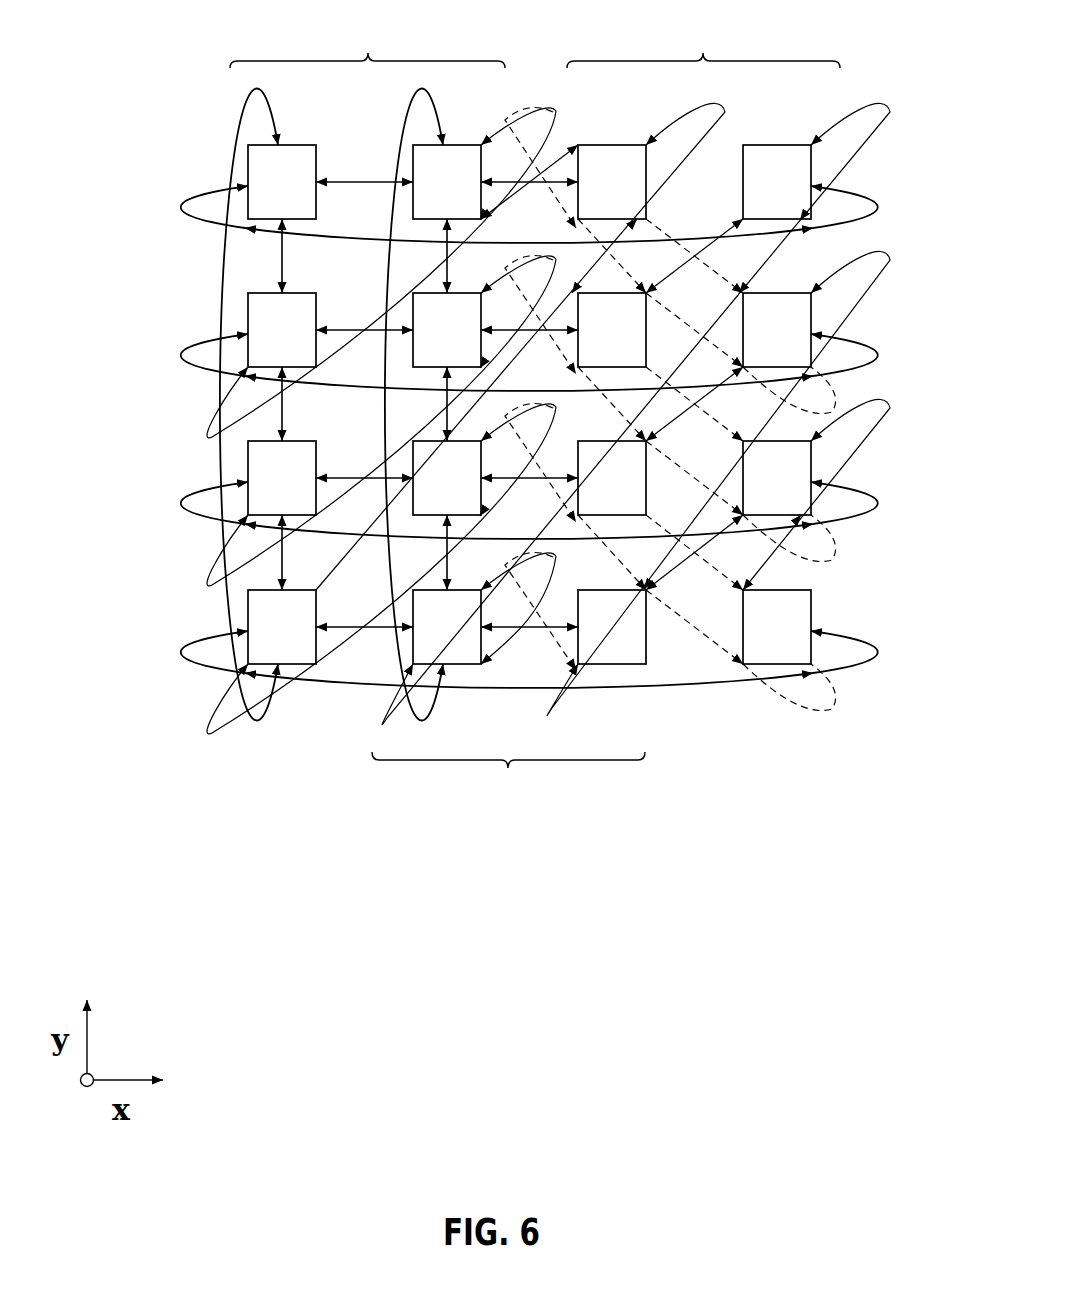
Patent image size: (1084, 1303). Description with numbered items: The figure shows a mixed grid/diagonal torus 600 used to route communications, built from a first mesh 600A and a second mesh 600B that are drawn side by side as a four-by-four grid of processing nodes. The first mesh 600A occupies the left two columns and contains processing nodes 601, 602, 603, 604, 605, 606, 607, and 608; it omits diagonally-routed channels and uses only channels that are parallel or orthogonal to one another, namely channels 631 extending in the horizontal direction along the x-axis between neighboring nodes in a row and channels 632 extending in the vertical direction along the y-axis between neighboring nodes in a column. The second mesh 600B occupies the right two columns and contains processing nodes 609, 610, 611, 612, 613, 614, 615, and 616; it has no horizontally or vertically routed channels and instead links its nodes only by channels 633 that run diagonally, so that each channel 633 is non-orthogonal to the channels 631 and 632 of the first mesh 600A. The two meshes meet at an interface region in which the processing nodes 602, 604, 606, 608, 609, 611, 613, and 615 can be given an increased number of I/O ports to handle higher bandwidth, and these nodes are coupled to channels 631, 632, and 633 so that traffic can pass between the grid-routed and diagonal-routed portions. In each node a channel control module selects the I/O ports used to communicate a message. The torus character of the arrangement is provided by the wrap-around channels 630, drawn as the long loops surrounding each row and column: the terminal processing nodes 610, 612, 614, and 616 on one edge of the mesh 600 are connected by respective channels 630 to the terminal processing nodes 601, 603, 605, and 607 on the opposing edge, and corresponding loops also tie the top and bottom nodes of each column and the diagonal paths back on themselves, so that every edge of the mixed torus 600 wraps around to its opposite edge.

The mixed torus 600 is at (901, 71).
The first mesh 600A is at (367, 46).
The second mesh 600B is at (703, 46).
The processing node 601 is at (282, 182).
The processing node 602 is at (447, 182).
The processing node 603 is at (282, 330).
The processing node 604 is at (447, 330).
The processing node 605 is at (282, 478).
The processing node 606 is at (447, 478).
The processing node 607 is at (282, 627).
The processing node 608 is at (447, 627).
The processing node 609 is at (612, 182).
The processing node 610 is at (777, 182).
The processing node 611 is at (612, 330).
The processing node 612 is at (777, 330).
The processing node 613 is at (612, 478).
The processing node 614 is at (777, 478).
The processing node 615 is at (612, 627).
The processing node 616 is at (777, 627).
The channel 630 is at (529, 671).
The channel 631 is at (364, 172).
The channel 632 is at (268, 256).
The channel 633 is at (704, 336).